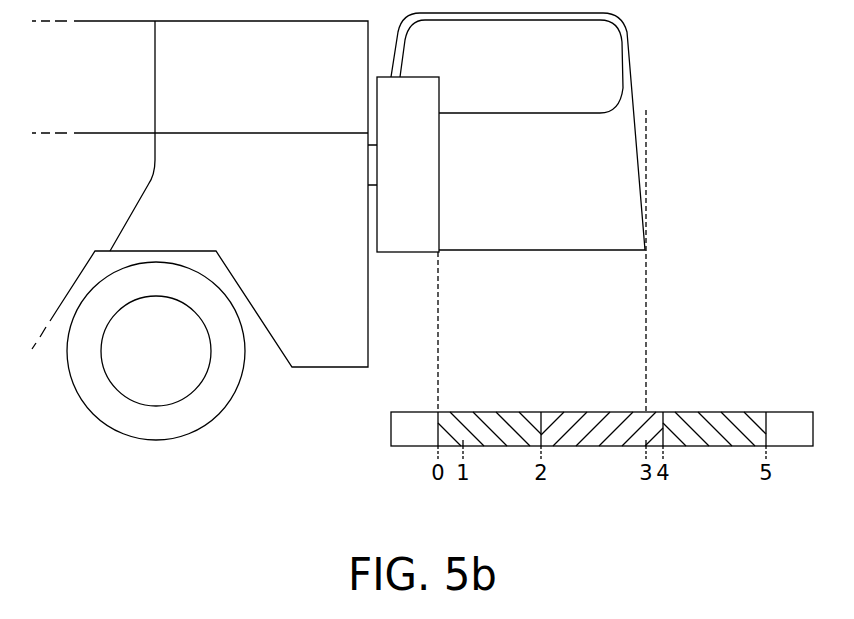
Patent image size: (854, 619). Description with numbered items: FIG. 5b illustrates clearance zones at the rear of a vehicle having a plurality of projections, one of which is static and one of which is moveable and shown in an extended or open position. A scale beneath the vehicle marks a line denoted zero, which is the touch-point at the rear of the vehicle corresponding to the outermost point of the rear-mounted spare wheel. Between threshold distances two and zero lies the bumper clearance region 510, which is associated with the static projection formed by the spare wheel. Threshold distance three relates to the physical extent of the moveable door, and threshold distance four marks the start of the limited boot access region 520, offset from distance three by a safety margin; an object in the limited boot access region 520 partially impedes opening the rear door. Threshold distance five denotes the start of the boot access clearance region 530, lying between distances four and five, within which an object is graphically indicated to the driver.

The bumper clearance (BC) region 510 is at (499, 458).
The Limited Boot Access (LBA) region 520 is at (598, 458).
The Boot Access Clearance (BAC) region 530 is at (713, 458).